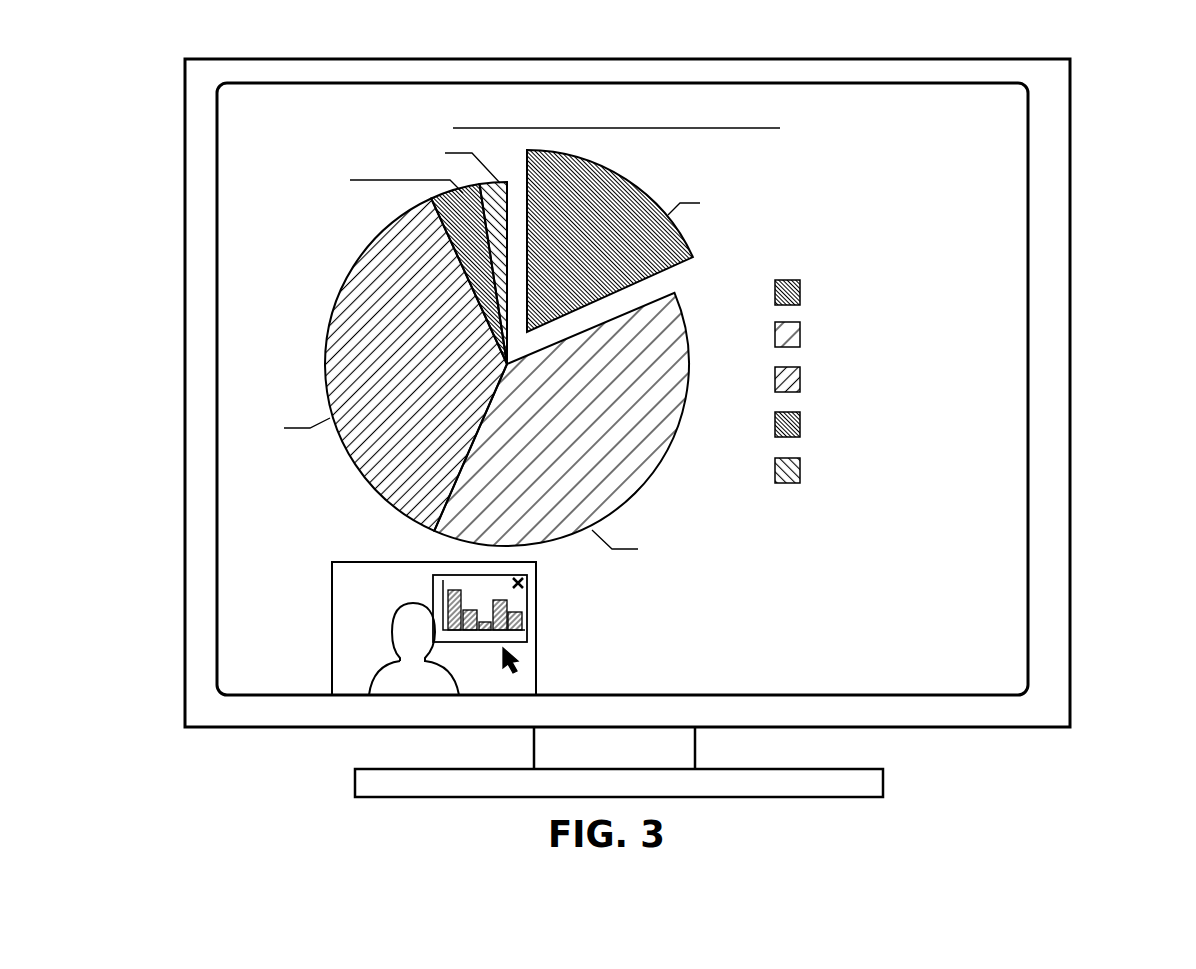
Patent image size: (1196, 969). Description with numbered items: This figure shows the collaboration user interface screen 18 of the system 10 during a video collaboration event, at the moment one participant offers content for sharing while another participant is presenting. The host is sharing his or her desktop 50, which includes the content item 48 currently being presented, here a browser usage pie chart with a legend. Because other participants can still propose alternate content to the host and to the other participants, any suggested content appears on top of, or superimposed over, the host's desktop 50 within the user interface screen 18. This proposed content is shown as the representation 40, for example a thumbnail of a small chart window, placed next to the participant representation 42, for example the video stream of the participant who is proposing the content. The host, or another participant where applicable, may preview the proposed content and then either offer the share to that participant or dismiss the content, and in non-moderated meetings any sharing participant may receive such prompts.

The system 10 is at (1100, 112).
The collaboration user interface screen 18 is at (362, 83).
The representation of the content being proposed 40 is at (527, 620).
The participant representation 42 is at (392, 633).
The content item 48 is at (230, 240).
The desktop 50 is at (230, 330).